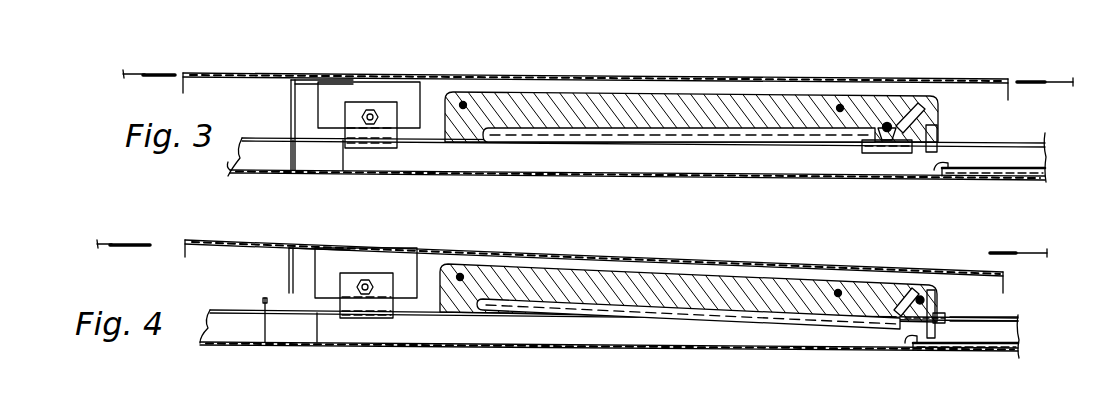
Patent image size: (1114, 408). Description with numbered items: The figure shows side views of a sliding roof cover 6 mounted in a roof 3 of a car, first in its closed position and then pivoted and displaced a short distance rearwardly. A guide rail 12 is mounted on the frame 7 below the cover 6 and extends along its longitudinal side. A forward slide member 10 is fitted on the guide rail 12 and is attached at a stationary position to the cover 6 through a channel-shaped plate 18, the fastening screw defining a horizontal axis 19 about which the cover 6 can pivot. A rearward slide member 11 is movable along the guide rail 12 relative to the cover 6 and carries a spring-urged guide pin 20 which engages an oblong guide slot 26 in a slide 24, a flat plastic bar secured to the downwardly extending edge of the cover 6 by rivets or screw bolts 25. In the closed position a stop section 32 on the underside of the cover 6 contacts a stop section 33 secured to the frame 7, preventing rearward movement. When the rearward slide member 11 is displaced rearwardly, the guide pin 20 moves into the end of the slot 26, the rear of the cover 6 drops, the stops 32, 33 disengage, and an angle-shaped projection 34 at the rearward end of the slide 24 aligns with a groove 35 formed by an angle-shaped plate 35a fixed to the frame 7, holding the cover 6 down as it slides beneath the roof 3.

In FIG. 3, the roof 3 is at (153, 72).
In FIG. 4, the roof 3 is at (128, 243).
In FIG. 3, the cover 6 is at (235, 72).
In FIG. 4, the cover 6 is at (218, 239).
In FIG. 3, the frame 7 is at (546, 172).
In FIG. 4, the frame 7 is at (609, 346).
In FIG. 3, the forward slide member 10 is at (396, 148).
In FIG. 4, the forward slide member 10 is at (370, 320).
In FIG. 3, the rearward slide member 11 is at (892, 150).
In FIG. 4, the rearward slide member 11 is at (942, 313).
In FIG. 3, the guide rail 12 is at (698, 165).
In FIG. 3, the channel-shaped plate 18 is at (362, 88).
In FIG. 4, the channel-shaped plate 18 is at (366, 273).
In FIG. 3, the horizontal axis 19 is at (372, 112).
In FIG. 4, the horizontal axis 19 is at (368, 282).
In FIG. 3, the guide pin 20 is at (887, 122).
In FIG. 3, the slide 24 is at (612, 105).
In FIG. 4, the slide 24 is at (685, 294).
In FIG. 3, the rivets or screw bolts 25 is at (460, 106).
In FIG. 3, the oblong guide slot 26 is at (614, 130).
In FIG. 4, the oblong guide slot 26 is at (609, 326).
In FIG. 3, the stop section 32 is at (290, 108).
In FIG. 4, the stop section 32 is at (287, 265).
In FIG. 3, the stop section 33 is at (296, 158).
In FIG. 4, the stop section 33 is at (270, 328).
In FIG. 3, the angle-shaped projection 34 is at (930, 152).
In FIG. 4, the angle-shaped projection 34 is at (935, 332).
In FIG. 3, the groove 35 is at (1050, 172).
In FIG. 4, the groove 35 is at (1020, 347).
In FIG. 3, the angle-shaped plate 35a is at (945, 165).
In FIG. 4, the angle-shaped plate 35a is at (917, 333).